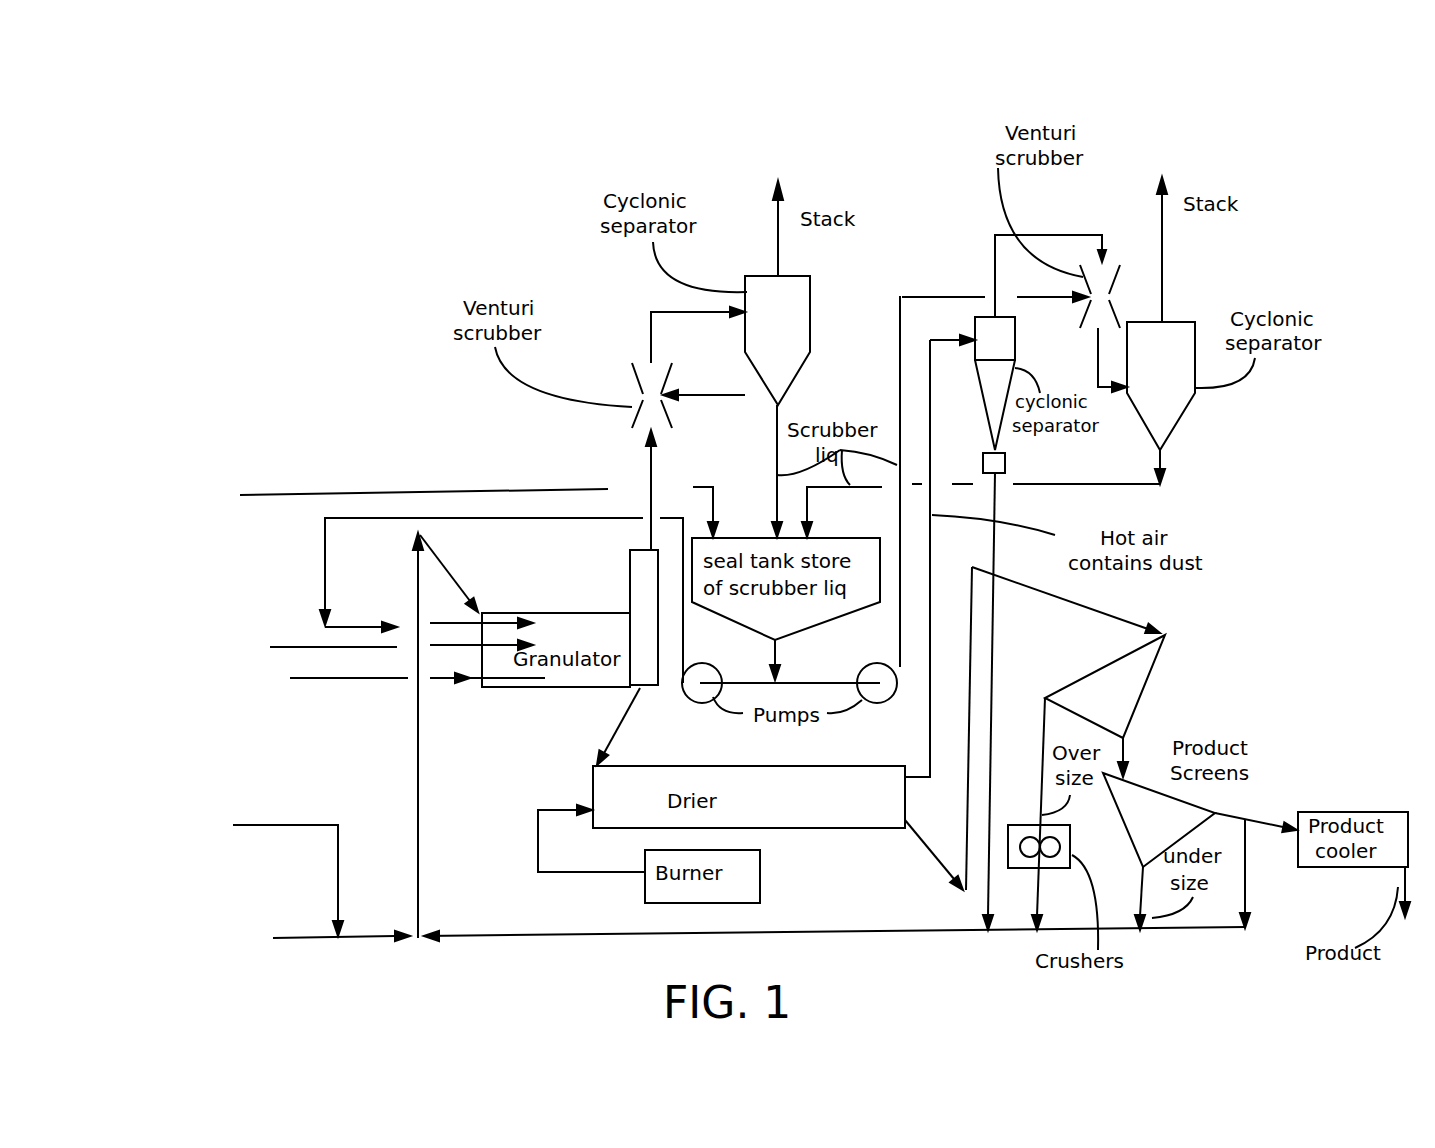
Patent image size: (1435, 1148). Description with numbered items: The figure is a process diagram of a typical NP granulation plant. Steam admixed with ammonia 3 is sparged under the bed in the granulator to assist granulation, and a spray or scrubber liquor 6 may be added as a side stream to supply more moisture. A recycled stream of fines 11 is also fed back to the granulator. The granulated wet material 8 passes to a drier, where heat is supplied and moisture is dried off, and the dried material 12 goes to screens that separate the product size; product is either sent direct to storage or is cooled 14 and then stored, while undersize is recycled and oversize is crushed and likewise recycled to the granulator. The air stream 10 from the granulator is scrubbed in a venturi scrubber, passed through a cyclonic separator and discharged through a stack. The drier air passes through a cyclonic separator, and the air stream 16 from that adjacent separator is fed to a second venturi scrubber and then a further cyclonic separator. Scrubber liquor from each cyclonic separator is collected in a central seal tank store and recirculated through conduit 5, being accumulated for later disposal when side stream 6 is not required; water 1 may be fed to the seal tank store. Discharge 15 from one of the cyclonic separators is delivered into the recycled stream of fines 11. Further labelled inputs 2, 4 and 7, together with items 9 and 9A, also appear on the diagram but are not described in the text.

The water 1 is at (410, 493).
The alum feed line 2 is at (292, 647).
The steam admixed with ammonia 3 is at (375, 682).
The metal oxide feed line 4 is at (297, 827).
The conduit 5 is at (893, 608).
The scrubber liquor side stream 6 is at (322, 597).
The urea fines feed line 7 is at (328, 943).
The granulated wet material 8 is at (595, 710).
The recycle feed arrow into granulator 9 is at (443, 567).
The granulator exhaust duct 9A is at (653, 687).
The air stream from the granulator 10 is at (650, 468).
The recycled stream of fines 11 is at (567, 938).
The dried material 12 is at (913, 837).
The cooled product 14 is at (1257, 823).
The cyclonic separator discharge 15 is at (990, 680).
The air stream from the adjacent cyclonic separator 16 is at (995, 257).